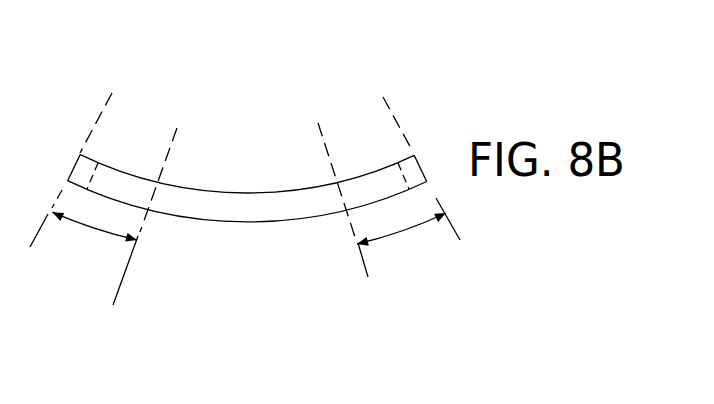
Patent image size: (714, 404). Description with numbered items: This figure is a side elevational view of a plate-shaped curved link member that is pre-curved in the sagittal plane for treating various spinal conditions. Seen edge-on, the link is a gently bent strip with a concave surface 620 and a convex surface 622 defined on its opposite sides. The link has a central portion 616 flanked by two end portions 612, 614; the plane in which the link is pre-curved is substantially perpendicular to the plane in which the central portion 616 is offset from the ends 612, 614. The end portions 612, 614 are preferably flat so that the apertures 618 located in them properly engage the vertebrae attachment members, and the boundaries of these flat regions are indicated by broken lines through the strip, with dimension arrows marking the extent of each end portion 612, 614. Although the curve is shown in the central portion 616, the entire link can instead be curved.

The end portion 612 is at (413, 232).
The end portion 614 is at (85, 233).
The central portion 616 is at (283, 208).
The aperture 618 is at (120, 178).
The concave surface 620 is at (209, 191).
The convex surface 622 is at (200, 224).